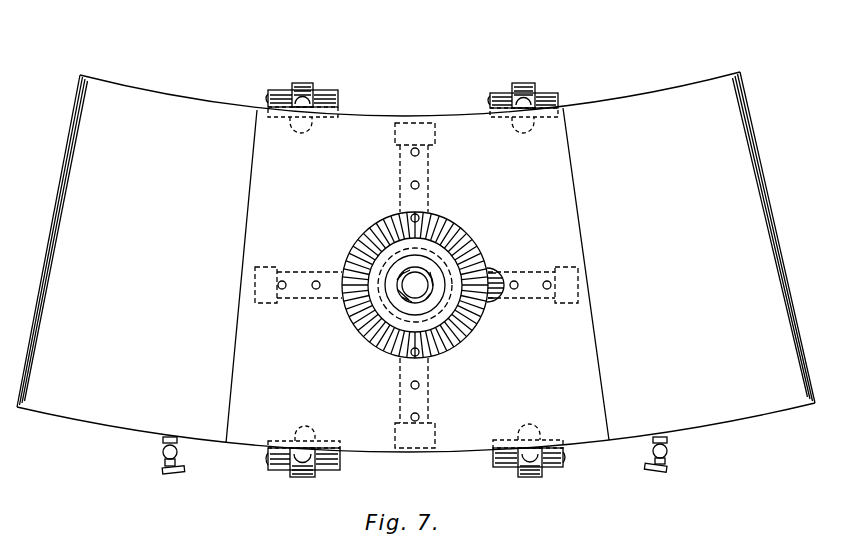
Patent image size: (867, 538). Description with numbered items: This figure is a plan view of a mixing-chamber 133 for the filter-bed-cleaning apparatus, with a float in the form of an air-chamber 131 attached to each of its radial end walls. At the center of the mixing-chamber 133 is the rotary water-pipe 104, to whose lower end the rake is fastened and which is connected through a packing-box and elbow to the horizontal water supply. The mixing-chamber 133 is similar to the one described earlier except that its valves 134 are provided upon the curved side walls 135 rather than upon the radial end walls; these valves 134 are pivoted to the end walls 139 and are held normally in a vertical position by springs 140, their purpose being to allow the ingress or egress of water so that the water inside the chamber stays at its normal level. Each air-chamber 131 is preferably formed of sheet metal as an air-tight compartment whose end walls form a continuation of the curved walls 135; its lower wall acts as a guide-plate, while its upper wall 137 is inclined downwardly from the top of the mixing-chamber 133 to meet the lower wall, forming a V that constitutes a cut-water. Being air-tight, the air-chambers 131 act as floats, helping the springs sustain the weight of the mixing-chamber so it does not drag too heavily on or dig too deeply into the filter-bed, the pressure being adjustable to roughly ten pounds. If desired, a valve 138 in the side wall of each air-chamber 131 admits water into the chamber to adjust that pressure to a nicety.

The rotary water-pipe 104 is at (430, 278).
The air-chamber 131 is at (110, 281).
The mixing-chamber 133 is at (505, 204).
The valve 134 is at (505, 115).
The curved side wall 135 is at (413, 115).
The upper wall 137 is at (128, 430).
The valve 138 is at (685, 496).
The end wall 139 is at (338, 101).
The spring 140 is at (330, 58).